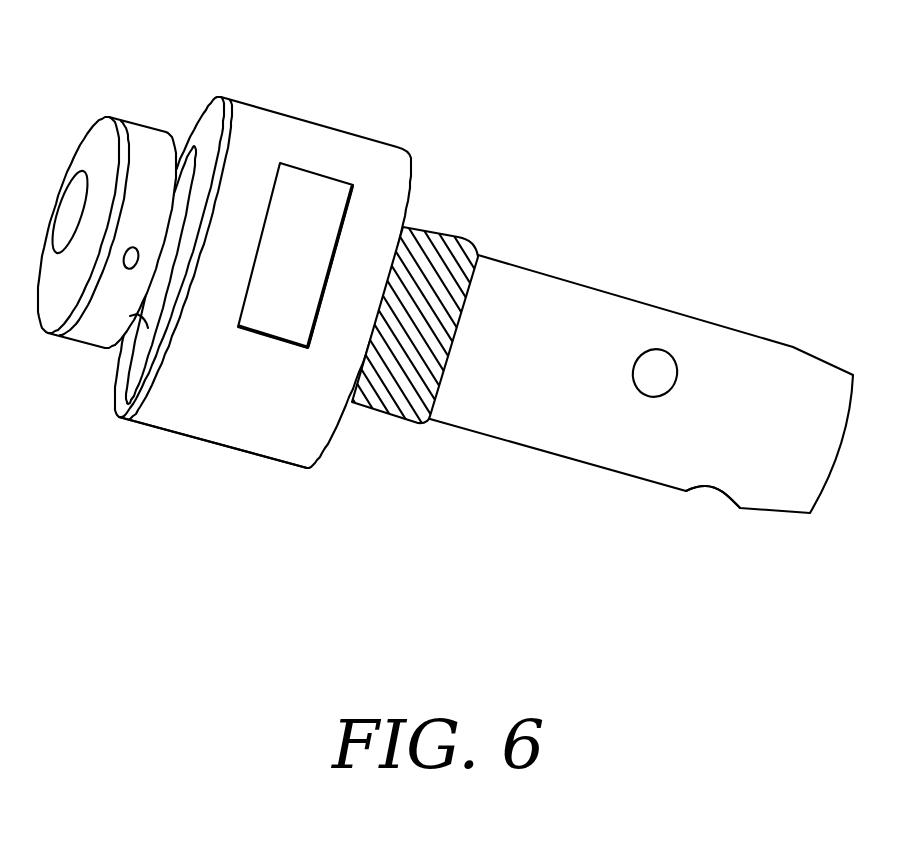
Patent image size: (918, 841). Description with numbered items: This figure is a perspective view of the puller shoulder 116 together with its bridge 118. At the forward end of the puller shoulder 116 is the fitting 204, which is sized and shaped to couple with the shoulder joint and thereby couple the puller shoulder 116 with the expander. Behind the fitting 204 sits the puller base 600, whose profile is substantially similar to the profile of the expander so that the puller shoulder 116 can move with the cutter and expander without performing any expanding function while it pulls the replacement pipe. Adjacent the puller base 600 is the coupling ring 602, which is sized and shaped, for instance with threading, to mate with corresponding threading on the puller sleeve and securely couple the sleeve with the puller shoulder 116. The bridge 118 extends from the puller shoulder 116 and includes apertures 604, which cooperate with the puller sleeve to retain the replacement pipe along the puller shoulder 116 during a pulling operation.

The fitting 204 is at (142, 116).
The puller shoulder 116 is at (313, 117).
The puller base 600 is at (233, 452).
The coupling ring 602 is at (437, 232).
The apertures 604 is at (663, 349).
The bridge 118 is at (567, 456).